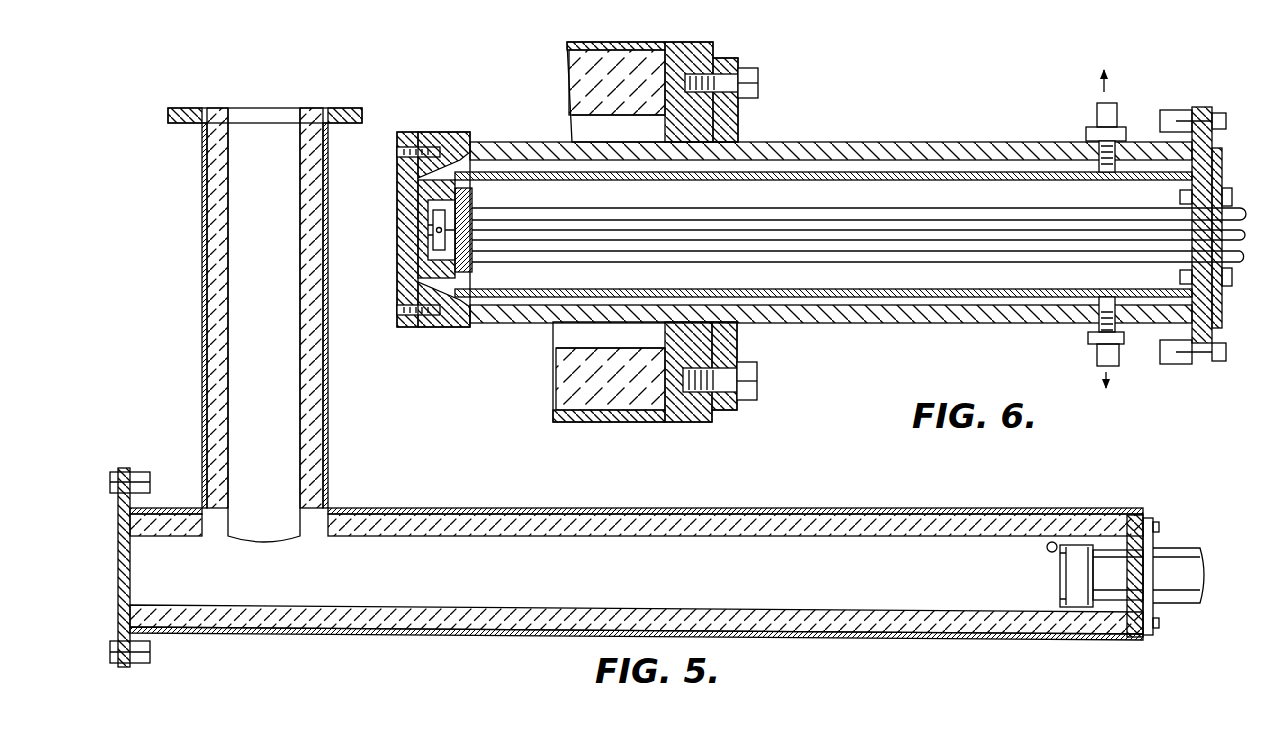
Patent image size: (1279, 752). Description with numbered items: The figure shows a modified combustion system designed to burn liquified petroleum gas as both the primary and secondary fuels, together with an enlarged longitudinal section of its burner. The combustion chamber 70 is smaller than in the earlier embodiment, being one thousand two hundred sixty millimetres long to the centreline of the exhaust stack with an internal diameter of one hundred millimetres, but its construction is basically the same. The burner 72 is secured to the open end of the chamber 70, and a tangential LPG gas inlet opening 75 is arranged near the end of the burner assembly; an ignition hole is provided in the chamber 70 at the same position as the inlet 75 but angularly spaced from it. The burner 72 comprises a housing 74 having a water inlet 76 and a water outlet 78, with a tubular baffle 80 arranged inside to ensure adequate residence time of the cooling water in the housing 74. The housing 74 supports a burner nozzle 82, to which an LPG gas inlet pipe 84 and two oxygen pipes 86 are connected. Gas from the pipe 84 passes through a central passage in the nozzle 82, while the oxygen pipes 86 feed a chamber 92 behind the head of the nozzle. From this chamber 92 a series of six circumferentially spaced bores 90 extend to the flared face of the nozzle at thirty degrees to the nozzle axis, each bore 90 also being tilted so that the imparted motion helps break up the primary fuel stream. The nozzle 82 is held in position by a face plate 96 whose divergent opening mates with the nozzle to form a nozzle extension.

In FIG. 5, the combustion chamber 70 is at (452, 500).
In FIG. 6, the burner 72 is at (909, 136).
In FIG. 5, the burner 72 is at (1181, 543).
In FIG. 6, the housing 74 is at (843, 150).
In FIG. 5, the housing 74 is at (1105, 563).
In FIG. 5, the tangential LPG gas inlet opening 75 is at (1050, 541).
In FIG. 6, the water inlet 76 is at (1096, 356).
In FIG. 6, the water outlet 78 is at (1099, 110).
In FIG. 6, the tubular baffle 80 is at (940, 175).
In FIG. 6, the burner nozzle 82 is at (398, 233).
In FIG. 6, the LPG gas inlet pipe 84 is at (938, 233).
In FIG. 6, the oxygen pipes 86 is at (848, 253).
In FIG. 6, the bores 90 is at (438, 245).
In FIG. 6, the chamber 92 is at (400, 198).
In FIG. 6, the face plate 96 is at (399, 176).
In FIG. 5, the face plate 96 is at (1062, 565).